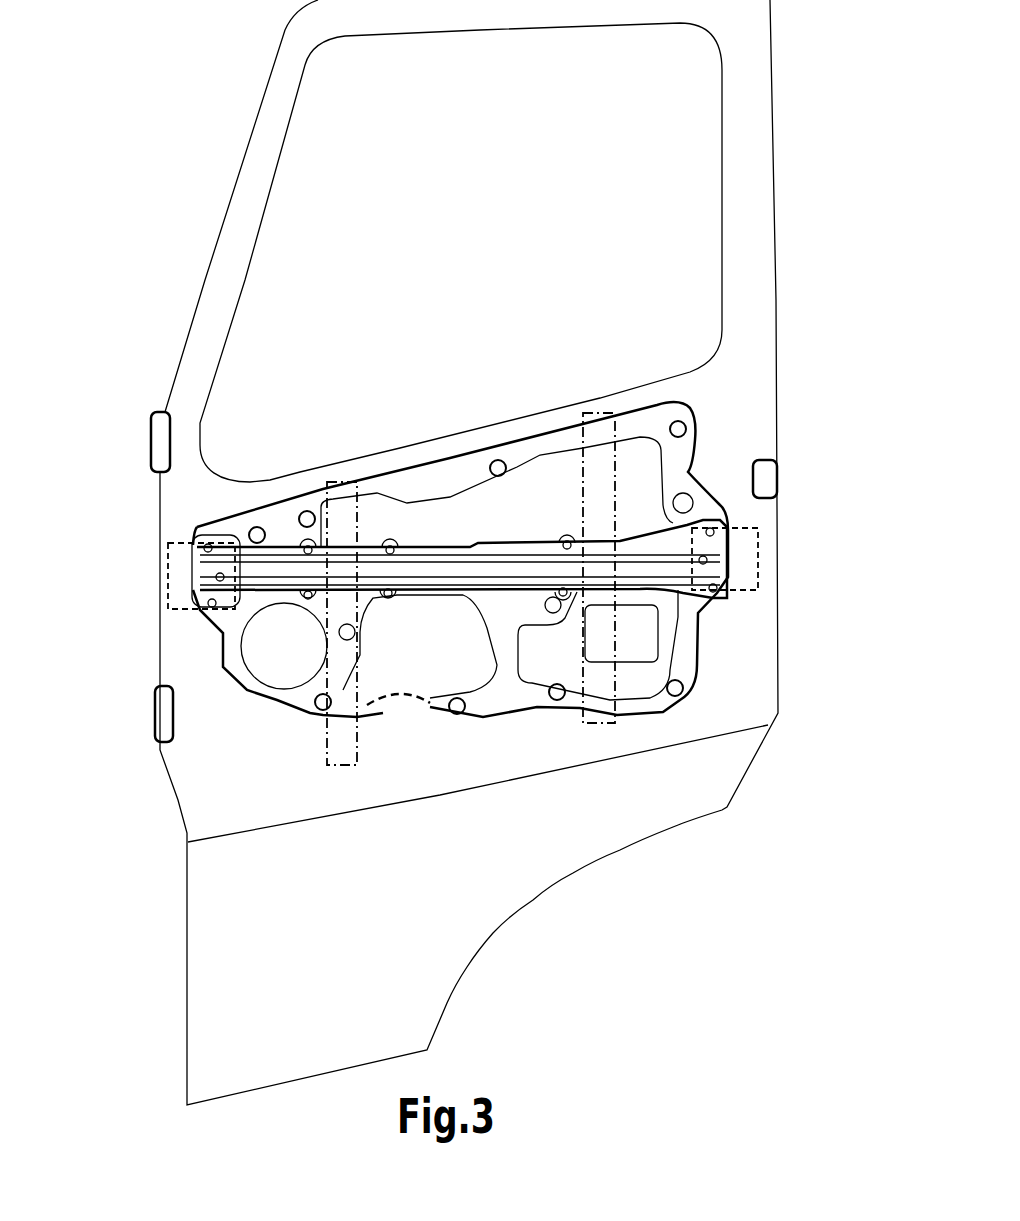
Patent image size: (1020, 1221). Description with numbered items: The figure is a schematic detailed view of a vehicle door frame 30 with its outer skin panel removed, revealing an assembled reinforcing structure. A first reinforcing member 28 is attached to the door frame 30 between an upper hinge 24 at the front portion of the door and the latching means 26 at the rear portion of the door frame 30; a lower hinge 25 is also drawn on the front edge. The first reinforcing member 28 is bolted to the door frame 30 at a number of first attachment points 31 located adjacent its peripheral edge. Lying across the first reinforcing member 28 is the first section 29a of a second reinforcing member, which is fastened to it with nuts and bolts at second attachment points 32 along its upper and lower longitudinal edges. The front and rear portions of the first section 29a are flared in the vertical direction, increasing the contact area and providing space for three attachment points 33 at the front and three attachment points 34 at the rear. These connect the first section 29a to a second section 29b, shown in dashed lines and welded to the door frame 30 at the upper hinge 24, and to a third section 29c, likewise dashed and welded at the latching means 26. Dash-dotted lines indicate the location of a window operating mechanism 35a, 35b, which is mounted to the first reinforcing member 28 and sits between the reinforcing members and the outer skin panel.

The upper hinge 24 is at (158, 448).
The lower door hinge 25 is at (158, 712).
The latching means 26 is at (773, 478).
The first reinforcing member 28 is at (283, 690).
The first section of the second reinforcing member 29a is at (262, 567).
The second section of the second reinforcing member 29b is at (166, 550).
The third section of the second reinforcing member 29c is at (757, 530).
The door frame 30 is at (752, 345).
The first attachment points 31 is at (676, 419).
The second attachment points 32 is at (563, 538).
The attachment points at the front portion of the first section 33 is at (208, 603).
The attachment points at the rear portion of the first section 34 is at (717, 588).
The window operating mechanism 35a is at (327, 735).
The window operating mechanism 35b is at (607, 503).